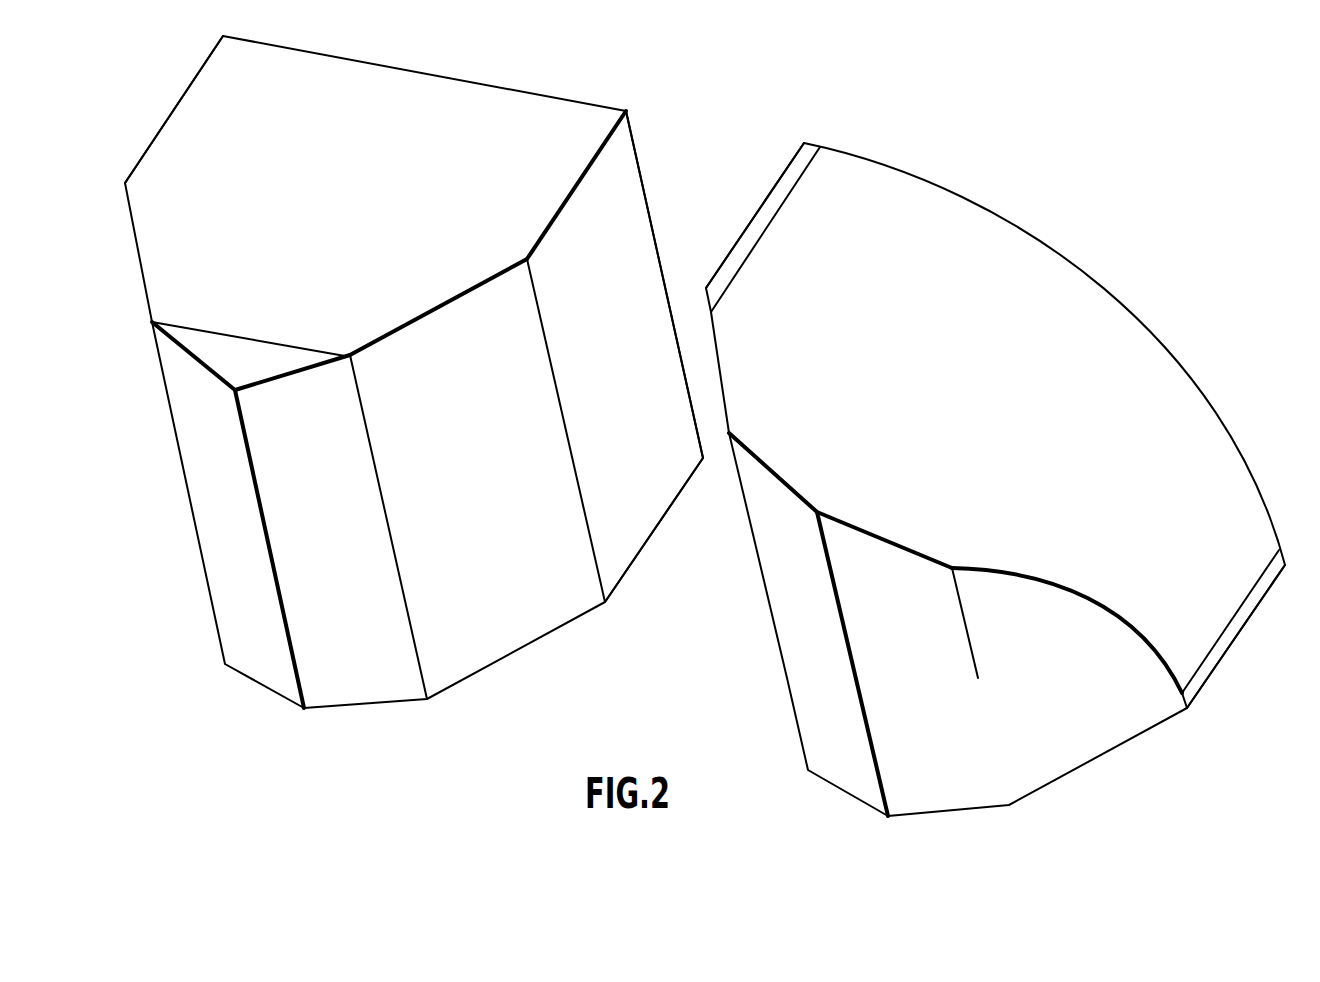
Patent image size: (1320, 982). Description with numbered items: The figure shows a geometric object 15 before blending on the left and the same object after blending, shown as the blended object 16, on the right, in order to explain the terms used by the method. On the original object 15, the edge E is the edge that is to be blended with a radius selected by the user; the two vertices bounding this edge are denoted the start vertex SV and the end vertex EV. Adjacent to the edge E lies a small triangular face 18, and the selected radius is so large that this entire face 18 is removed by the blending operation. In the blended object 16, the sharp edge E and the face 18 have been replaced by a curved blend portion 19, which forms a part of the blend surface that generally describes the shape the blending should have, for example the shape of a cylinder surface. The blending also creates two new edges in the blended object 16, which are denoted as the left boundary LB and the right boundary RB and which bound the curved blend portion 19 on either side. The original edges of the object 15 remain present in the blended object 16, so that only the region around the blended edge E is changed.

The geometric object 15 is at (379, 765).
The blended object 16 is at (967, 851).
The face 18 is at (244, 360).
The curved blend portion 19 is at (1050, 255).
The start vertex SV is at (527, 259).
The end vertex EV is at (627, 112).
The edge E is at (548, 228).
The left boundary LB is at (762, 240).
The right boundary RB is at (1232, 615).